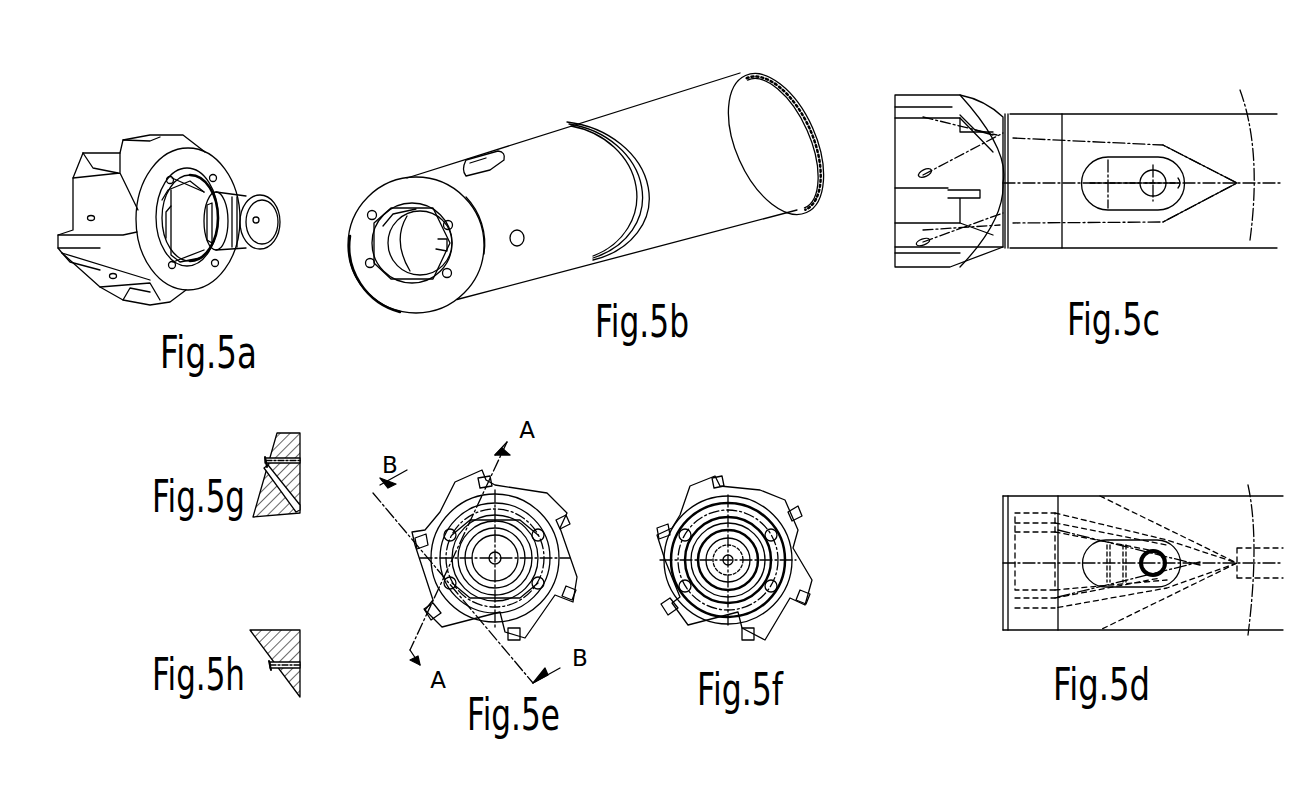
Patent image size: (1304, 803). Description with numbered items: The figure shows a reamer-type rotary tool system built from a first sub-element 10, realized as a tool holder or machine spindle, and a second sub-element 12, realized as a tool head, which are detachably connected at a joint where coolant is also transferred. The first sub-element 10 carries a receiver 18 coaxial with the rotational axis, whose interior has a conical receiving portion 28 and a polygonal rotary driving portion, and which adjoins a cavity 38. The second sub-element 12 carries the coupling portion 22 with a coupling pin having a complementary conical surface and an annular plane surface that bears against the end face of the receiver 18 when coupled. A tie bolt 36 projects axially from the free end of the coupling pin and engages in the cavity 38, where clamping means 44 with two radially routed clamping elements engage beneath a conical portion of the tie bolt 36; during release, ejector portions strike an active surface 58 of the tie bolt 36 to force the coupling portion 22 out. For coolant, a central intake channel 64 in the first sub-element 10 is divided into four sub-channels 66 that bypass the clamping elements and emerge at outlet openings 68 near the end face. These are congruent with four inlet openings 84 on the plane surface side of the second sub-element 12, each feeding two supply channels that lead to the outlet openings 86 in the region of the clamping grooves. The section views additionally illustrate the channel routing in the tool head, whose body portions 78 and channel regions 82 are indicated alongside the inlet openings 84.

In FIG. 5B, the first sub-element 10 is at (652, 108).
In FIG. 5A, the second sub-element 12 is at (226, 160).
In FIG. 5E, the second sub-element 12 is at (562, 485).
In FIG. 5F, the second sub-element 12 is at (693, 472).
In FIG. 5G, the second sub-element 12 is at (270, 508).
In FIG. 5H, the second sub-element 12 is at (271, 632).
In FIG. 5B, the receiver 18 is at (404, 222).
In FIG. 5A, the coupling portion 22 is at (220, 205).
In FIG. 5B, the conical receiving portion 28 is at (392, 265).
In FIG. 5A, the tie bolt 36 is at (267, 241).
In FIG. 5B, the cavity 38 is at (426, 251).
In FIG. 5B, the clamping means 44 is at (470, 165).
In FIG. 5C, the clamping means 44 is at (1118, 165).
In FIG. 5D, the clamping means 44 is at (1137, 550).
In FIG. 5A, the active surface 58 is at (268, 232).
In FIG. 5C, the intake channel 64 is at (1242, 95).
In FIG. 5D, the intake channel 64 is at (1248, 500).
In FIG. 5C, the sub-channels 66 is at (1134, 145).
In FIG. 5D, the sub-channels 66 is at (1115, 520).
In FIG. 5B, the outlet openings 68 is at (450, 229).
In FIG. 5D, the outlet openings 68 is at (1005, 520).
In FIG. 5A, the clamping body 78 is at (104, 190).
In FIG. 5C, the clamping body 78 is at (905, 153).
In FIG. 5E, the clamping body 78 is at (512, 495).
In FIG. 5F, the clamping body 78 is at (733, 500).
In FIG. 5C, the coolant outlet channel 82 is at (992, 133).
In FIG. 5F, the coolant outlet channel 82 is at (752, 515).
In FIG. 5G, the coolant outlet channel 82 is at (300, 500).
In FIG. 5H, the coolant outlet channel 82 is at (299, 662).
In FIG. 5A, the inlet openings 84 is at (185, 165).
In FIG. 5E, the inlet openings 84 is at (545, 585).
In FIG. 5F, the inlet openings 84 is at (786, 590).
In FIG. 5G, the inlet openings 84 is at (266, 462).
In FIG. 5H, the inlet openings 84 is at (270, 667).
In FIG. 5A, the outlet openings 86 is at (89, 215).
In FIG. 5C, the outlet openings 86 is at (925, 170).